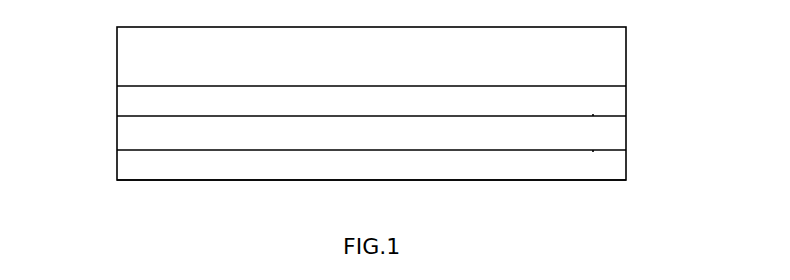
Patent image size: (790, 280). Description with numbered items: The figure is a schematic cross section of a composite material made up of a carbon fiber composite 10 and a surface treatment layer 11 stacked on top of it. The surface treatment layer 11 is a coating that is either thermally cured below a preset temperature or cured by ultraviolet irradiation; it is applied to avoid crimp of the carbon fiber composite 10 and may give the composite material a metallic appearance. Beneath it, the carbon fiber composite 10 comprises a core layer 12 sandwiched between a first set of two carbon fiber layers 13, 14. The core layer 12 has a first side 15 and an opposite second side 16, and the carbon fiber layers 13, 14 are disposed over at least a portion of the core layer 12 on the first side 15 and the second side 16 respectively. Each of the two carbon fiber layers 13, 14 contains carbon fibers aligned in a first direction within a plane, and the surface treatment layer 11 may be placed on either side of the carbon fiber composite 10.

The carbon fiber composite 10 is at (626, 130).
The surface treatment layer 11 is at (626, 60).
The core layer 12 is at (117, 138).
The first carbon fiber layer 13 is at (117, 106).
The second carbon fiber layer 14 is at (117, 168).
The first side 15 is at (593, 115).
The second side 16 is at (593, 151).